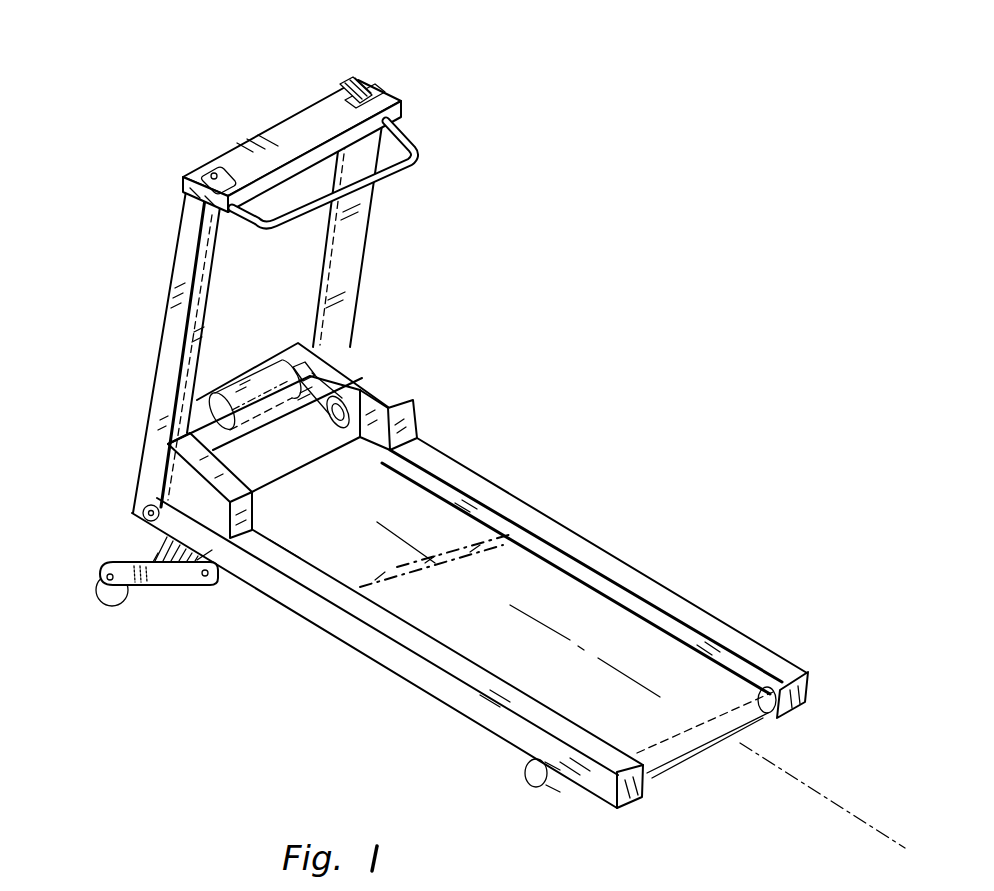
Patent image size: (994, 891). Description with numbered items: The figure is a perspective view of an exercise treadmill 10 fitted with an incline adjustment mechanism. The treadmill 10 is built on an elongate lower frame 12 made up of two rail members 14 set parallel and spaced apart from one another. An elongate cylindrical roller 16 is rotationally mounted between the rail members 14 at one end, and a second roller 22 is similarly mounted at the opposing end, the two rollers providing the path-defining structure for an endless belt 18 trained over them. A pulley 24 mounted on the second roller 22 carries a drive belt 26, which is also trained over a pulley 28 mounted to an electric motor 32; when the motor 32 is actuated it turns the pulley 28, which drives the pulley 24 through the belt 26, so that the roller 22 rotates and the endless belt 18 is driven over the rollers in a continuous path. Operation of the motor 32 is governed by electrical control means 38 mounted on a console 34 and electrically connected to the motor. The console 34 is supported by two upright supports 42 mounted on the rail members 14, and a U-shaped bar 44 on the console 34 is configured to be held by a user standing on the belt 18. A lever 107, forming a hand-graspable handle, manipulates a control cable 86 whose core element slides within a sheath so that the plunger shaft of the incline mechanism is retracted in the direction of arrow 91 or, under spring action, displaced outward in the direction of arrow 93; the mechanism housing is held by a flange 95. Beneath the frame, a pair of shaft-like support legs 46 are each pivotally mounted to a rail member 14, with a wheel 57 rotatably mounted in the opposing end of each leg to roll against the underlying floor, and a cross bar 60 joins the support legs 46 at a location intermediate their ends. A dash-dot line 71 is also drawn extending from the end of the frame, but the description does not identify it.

The treadmill 10 is at (503, 471).
The lower frame 12 is at (410, 663).
The rail members 14 is at (655, 591).
The roller 16 is at (710, 737).
The endless belt 18 is at (463, 596).
The second roller 22 is at (267, 447).
The pulley 24 is at (397, 380).
The belt 26 is at (363, 347).
The pulley 28 is at (300, 367).
The electric motor 32 is at (257, 390).
The console 34 is at (273, 137).
The electrical control means 38 is at (214, 172).
The upright supports 42 is at (175, 340).
The U-shaped bar 44 is at (432, 142).
The support legs 46 is at (170, 577).
The wheel 57 is at (102, 593).
The cross bar 60 is at (157, 546).
The axis 71 is at (873, 828).
The control cable 86 is at (340, 268).
The arrow 91 is at (533, 782).
The arrow 93 is at (662, 772).
The flange 95 is at (133, 515).
The lever 107 is at (346, 82).